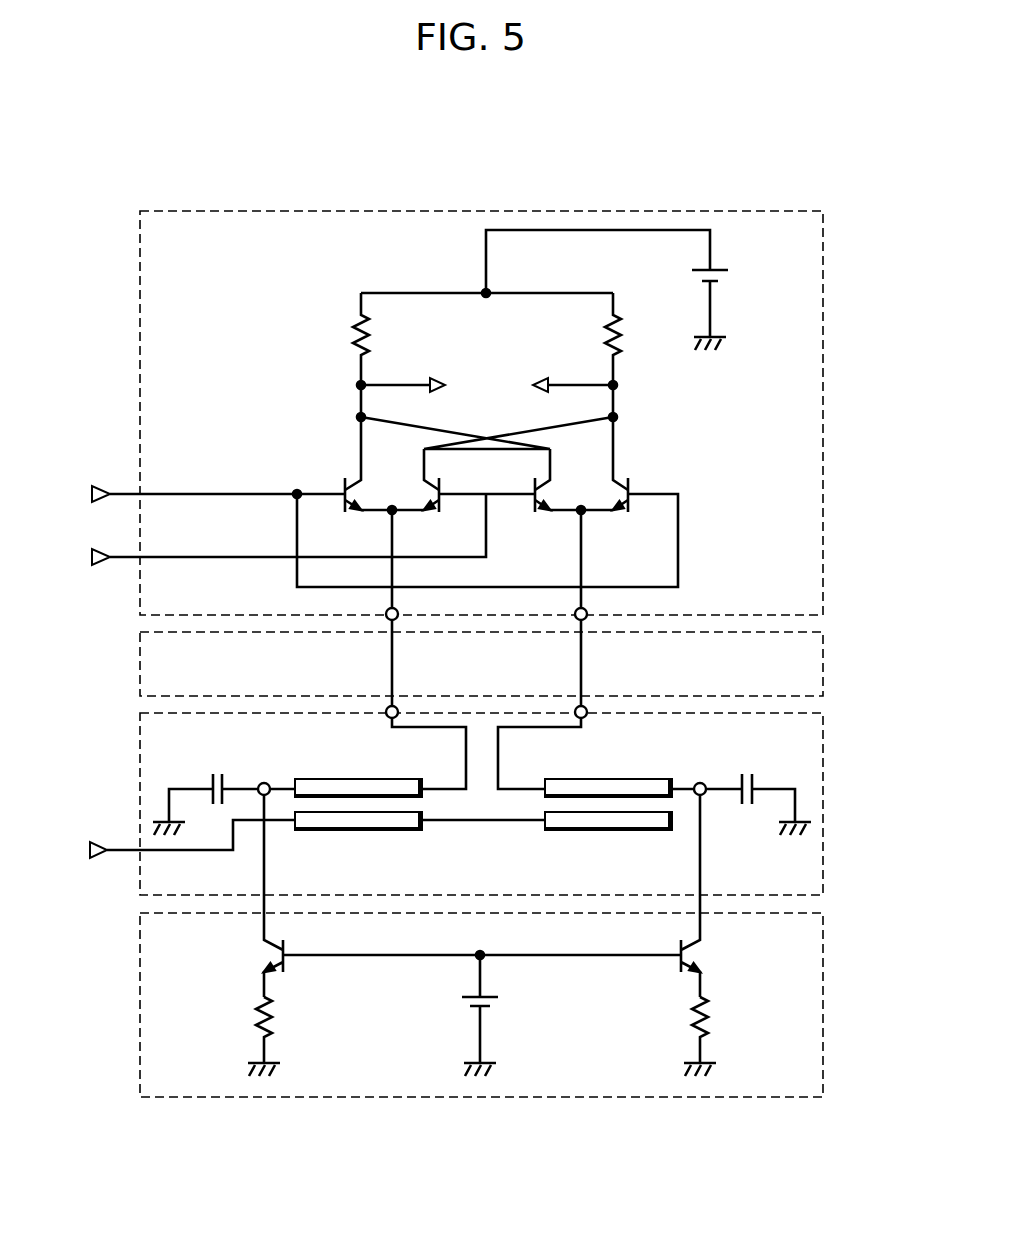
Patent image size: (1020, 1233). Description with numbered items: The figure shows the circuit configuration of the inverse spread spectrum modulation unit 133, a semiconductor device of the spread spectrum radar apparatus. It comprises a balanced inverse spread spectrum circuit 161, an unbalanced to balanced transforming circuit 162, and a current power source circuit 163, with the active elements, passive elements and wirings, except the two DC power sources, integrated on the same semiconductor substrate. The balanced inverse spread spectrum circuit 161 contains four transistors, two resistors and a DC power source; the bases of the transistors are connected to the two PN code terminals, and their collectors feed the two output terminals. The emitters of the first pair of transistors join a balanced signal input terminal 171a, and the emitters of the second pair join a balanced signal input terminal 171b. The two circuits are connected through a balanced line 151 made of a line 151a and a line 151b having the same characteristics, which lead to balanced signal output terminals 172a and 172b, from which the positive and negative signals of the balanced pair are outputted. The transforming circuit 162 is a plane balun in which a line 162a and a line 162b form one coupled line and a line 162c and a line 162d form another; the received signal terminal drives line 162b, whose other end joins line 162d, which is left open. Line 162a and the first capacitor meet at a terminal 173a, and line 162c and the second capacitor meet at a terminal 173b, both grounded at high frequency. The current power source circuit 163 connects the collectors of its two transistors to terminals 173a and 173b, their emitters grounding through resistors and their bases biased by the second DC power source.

The inverse spread spectrum modulation unit 133 is at (519, 132).
The balanced inverse spread spectrum circuit 161 is at (826, 237).
The balanced line 151 is at (825, 660).
The unbalanced to balanced transforming circuit 162 is at (825, 775).
The current power source circuit 163 is at (823, 937).
The balanced signal input terminal 171a is at (386, 611).
The balanced signal input terminal 171b is at (587, 611).
The line 151a is at (392, 655).
The line 151b is at (581, 678).
The balanced signal output terminal 172a is at (388, 718).
The balanced signal output terminal 172b is at (585, 718).
The terminal 173a is at (263, 782).
The terminal 173b is at (704, 796).
The line 162a is at (378, 779).
The line 162b is at (375, 831).
The line 162c is at (598, 779).
The line 162d is at (610, 831).